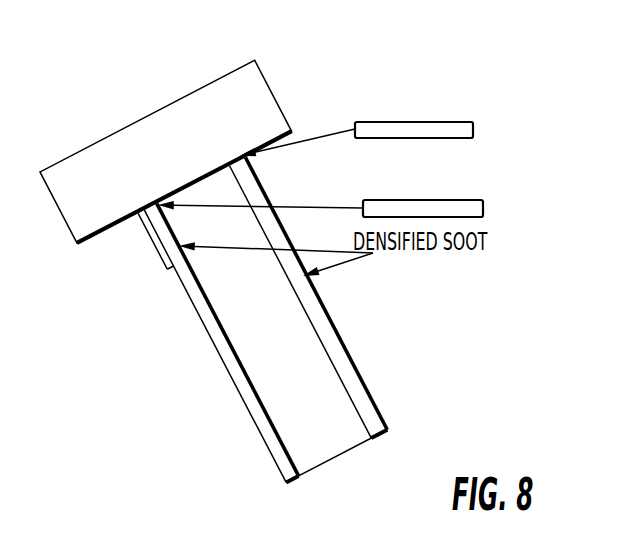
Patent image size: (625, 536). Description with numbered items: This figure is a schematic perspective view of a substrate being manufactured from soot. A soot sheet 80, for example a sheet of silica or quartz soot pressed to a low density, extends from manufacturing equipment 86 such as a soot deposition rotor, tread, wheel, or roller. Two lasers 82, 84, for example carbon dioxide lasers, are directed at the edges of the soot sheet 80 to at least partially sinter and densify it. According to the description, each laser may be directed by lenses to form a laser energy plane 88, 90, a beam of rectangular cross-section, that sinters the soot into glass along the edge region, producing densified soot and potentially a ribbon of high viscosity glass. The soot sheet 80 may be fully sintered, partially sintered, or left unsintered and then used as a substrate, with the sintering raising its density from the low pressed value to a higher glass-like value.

The soot sheet 80 is at (303, 402).
The laser 82 is at (474, 128).
The laser 84 is at (484, 209).
The manufacturing equipment 86 is at (240, 118).
The laser energy plane 88 is at (151, 218).
The laser energy plane 90 is at (241, 156).